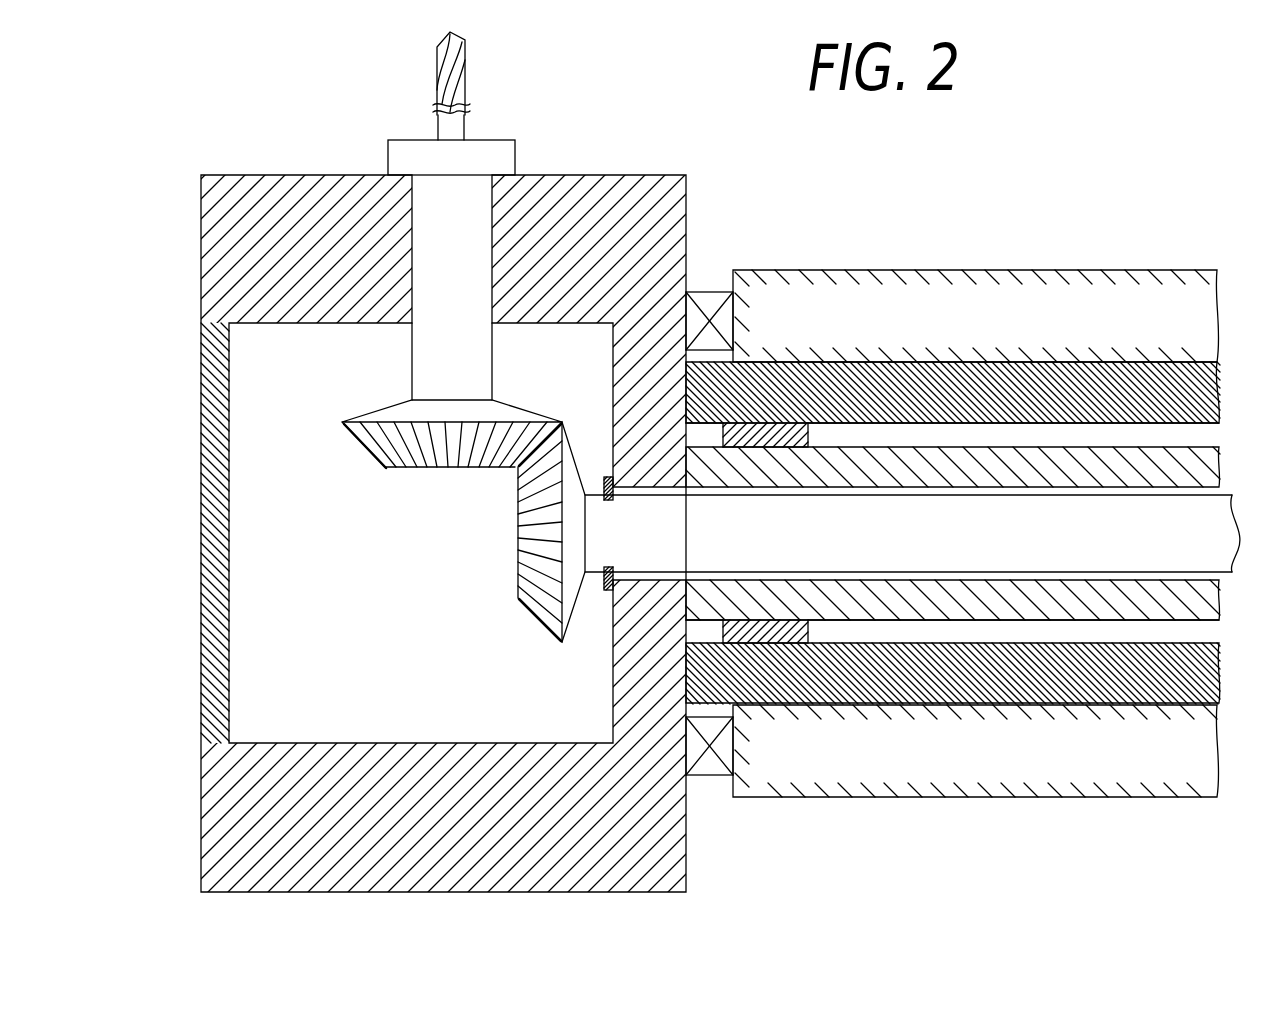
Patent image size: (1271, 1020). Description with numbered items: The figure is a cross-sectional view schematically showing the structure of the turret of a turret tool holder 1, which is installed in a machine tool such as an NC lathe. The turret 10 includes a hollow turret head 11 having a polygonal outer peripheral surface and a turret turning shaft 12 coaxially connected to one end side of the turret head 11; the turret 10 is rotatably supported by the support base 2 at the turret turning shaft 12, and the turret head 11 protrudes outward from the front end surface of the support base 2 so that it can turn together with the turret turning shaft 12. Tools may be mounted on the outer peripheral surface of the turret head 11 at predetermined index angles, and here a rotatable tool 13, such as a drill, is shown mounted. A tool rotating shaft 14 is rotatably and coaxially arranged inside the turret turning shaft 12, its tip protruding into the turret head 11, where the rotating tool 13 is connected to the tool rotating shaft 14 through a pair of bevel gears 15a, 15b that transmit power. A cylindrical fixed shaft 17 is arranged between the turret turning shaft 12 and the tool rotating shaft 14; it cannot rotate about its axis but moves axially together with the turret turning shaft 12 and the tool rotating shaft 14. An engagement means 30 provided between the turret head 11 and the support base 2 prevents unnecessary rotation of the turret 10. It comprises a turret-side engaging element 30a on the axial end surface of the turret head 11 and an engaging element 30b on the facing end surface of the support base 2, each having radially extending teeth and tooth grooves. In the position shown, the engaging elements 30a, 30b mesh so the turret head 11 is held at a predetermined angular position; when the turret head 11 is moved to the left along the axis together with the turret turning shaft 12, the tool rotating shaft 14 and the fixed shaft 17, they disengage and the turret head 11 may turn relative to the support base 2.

The turret tool holder 1 is at (1137, 123).
The support base 2 is at (982, 300).
The turret 10 is at (637, 170).
The turret head 11 is at (272, 187).
The turret turning shaft 12 is at (1097, 350).
The rotatable tool 13 is at (458, 54).
The tool rotating shaft 14 is at (862, 513).
The bevel gear 15a is at (443, 455).
The bevel gear 15b is at (530, 562).
The fixed shaft 17 is at (947, 605).
The engagement means 30 is at (714, 282).
The turret-side engaging element 30a is at (709, 321).
The engaging element 30b is at (709, 746).